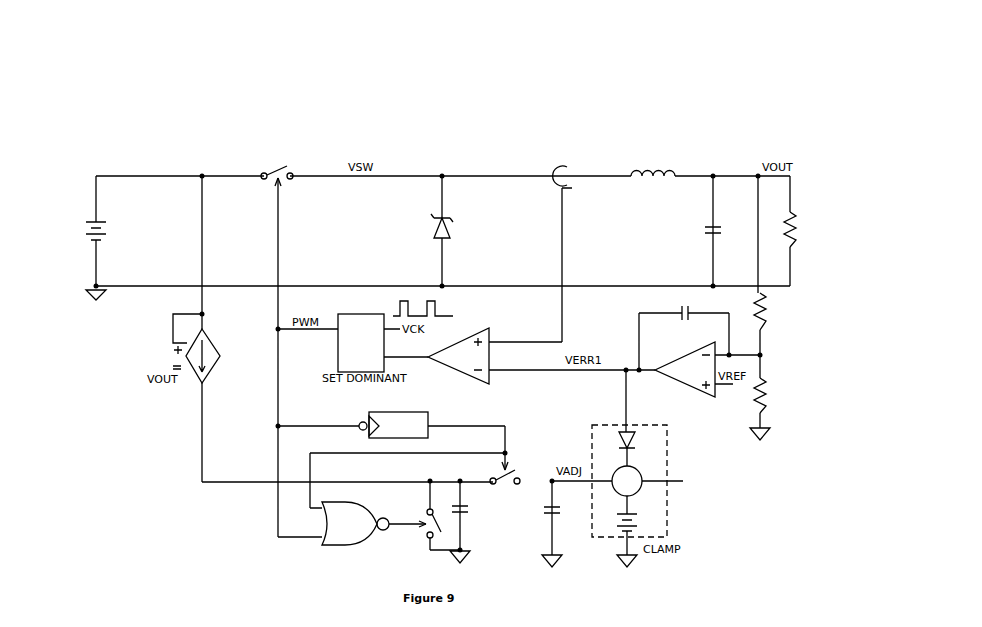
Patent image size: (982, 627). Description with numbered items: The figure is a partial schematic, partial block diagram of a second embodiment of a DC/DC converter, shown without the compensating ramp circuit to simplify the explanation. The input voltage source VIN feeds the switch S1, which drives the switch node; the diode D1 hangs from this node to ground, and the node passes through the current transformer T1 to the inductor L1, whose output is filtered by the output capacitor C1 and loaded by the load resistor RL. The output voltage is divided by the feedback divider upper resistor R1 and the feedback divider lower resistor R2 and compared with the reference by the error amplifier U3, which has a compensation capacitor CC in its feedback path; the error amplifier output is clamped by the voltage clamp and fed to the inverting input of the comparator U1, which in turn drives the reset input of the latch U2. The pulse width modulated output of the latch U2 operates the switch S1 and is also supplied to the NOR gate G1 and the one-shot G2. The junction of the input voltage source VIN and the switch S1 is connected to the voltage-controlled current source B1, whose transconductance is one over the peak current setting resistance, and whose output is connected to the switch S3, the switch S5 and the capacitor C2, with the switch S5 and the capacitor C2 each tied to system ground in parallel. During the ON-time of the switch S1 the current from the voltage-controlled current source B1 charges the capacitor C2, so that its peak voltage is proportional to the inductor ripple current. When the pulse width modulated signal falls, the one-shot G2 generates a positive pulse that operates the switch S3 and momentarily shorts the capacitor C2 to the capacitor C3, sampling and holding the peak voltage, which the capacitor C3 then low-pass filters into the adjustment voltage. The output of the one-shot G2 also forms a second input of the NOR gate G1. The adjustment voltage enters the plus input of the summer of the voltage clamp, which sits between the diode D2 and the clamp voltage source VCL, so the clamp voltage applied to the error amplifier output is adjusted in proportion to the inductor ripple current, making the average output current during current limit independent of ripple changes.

The input voltage source VIN is at (83, 231).
The switch S1 is at (277, 166).
The diode D1 is at (450, 226).
The current transformer T1 is at (562, 170).
The inductor L1 is at (653, 165).
The output capacitor C1 is at (723, 230).
The load resistor RL is at (799, 229).
The voltage-controlled current source B1 is at (218, 361).
The latch U2 is at (361, 336).
The comparator U1 is at (458, 356).
The error amplifier U3 is at (685, 362).
The compensation capacitor CC is at (684, 307).
The feedback divider upper resistor R1 is at (760, 311).
The feedback divider lower resistor R2 is at (760, 395).
The one-shot G2 is at (394, 418).
The NOR gate G1 is at (374, 527).
The switch S5 is at (420, 519).
The capacitor C2 is at (470, 513).
The switch S3 is at (505, 481).
The capacitor C3 is at (565, 513).
The diode D2 is at (639, 443).
The clamp voltage source VCL is at (641, 519).